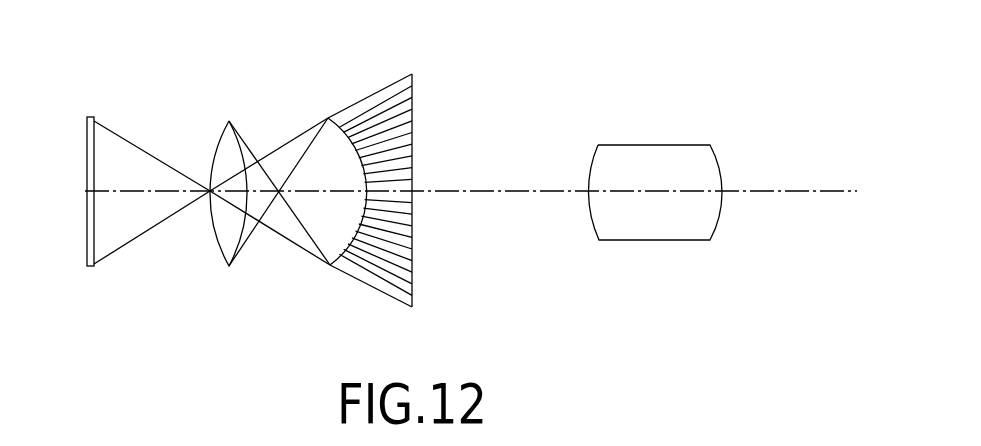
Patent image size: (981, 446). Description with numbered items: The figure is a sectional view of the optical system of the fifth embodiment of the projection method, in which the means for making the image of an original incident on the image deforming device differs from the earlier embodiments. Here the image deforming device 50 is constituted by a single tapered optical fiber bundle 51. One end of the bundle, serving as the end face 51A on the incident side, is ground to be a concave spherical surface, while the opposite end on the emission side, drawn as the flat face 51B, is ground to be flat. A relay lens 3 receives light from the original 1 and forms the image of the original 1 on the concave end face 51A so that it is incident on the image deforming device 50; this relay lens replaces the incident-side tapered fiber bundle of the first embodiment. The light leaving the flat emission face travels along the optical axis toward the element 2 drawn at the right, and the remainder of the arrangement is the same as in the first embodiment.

The original 1 is at (85, 232).
The observer's eye / image plane element 2 is at (697, 150).
The relay lens 3 is at (230, 138).
The image deforming device 50 is at (374, 169).
The tapered optical fiber bundle 51 is at (387, 97).
The end face on the incident side 51A is at (338, 241).
The flat lens surface 51B is at (413, 267).